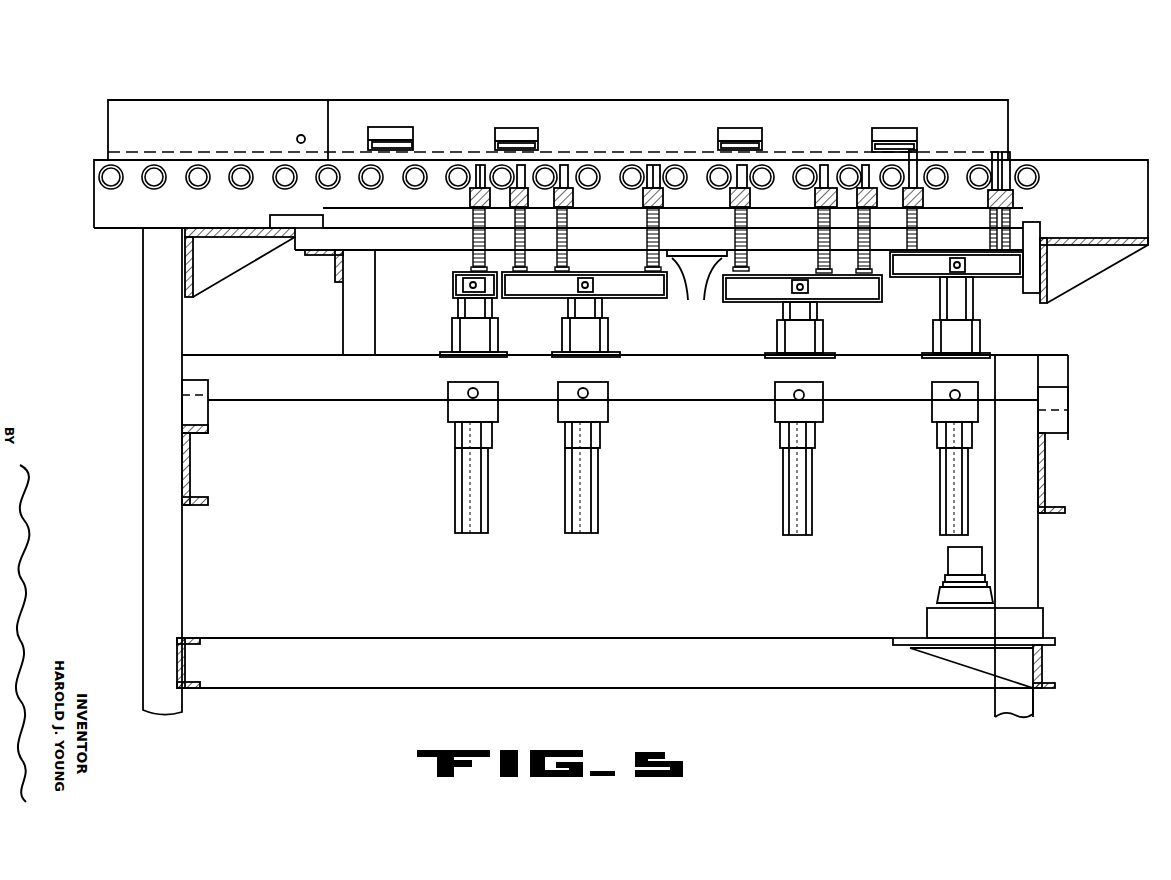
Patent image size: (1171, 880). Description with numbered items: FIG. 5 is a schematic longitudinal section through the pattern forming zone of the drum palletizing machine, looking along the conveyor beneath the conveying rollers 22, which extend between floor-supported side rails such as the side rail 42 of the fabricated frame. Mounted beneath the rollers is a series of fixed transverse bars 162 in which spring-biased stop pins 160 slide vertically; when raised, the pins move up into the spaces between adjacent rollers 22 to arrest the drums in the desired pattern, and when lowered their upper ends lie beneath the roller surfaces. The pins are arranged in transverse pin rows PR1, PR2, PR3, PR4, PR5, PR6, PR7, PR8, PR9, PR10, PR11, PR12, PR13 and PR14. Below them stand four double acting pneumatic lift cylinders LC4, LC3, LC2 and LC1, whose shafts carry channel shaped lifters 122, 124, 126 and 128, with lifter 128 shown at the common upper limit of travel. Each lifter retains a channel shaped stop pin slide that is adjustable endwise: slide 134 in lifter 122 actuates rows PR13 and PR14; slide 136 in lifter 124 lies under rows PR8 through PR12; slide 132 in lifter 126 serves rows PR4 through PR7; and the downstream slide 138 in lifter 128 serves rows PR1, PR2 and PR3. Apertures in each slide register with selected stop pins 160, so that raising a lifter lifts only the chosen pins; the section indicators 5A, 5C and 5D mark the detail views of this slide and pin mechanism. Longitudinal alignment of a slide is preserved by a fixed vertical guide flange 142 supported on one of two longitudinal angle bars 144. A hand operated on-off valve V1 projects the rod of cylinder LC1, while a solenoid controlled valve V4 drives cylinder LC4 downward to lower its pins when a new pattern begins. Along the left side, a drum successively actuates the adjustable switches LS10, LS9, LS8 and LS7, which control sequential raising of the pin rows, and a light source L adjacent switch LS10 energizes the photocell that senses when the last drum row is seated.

The conveying rollers 22 is at (200, 164).
The side rail 42 is at (105, 198).
The light source L is at (297, 137).
The switch LS10 is at (378, 127).
The switch LS9 is at (513, 128).
The switch LS8 is at (745, 128).
The switch LS7 is at (905, 128).
The pin row PR1 is at (1006, 154).
The pin row PR2 is at (995, 152).
The pin row PR3 is at (913, 155).
The pin row PR4 is at (867, 158).
The pin row PR5 is at (865, 158).
The pin row PR6 is at (821, 158).
The pin row PR7 is at (828, 158).
The pin row PR8 is at (664, 158).
The pin row PR9 is at (653, 156).
The pin row PR10 is at (643, 158).
The pin row PR11 is at (598, 142).
The pin row PR12 is at (532, 158).
The pin row PR13 is at (484, 158).
The pin row PR14 is at (470, 158).
The stop pins 160 is at (472, 191).
The transverse bars 162 is at (528, 196).
The lifter 122 is at (455, 299).
The lifter 124 is at (563, 299).
The lifter 126 is at (837, 305).
The lifter 128 is at (878, 302).
The stop pin slide 132 is at (771, 275).
The slide 134 is at (465, 271).
The slide 136 is at (610, 272).
The slide 138 is at (940, 243).
The guide flange 142 is at (673, 258).
The angle bars 144 is at (298, 243).
The section line 5A is at (748, 297).
The section line 5C is at (450, 290).
The section line 5D is at (295, 337).
The lift cylinder LC1 is at (940, 484).
The lift cylinder LC2 is at (792, 484).
The lift cylinder LC3 is at (577, 486).
The lift cylinder LC4 is at (468, 487).
The on-off valve V1 is at (1064, 410).
The valve V4 is at (952, 558).